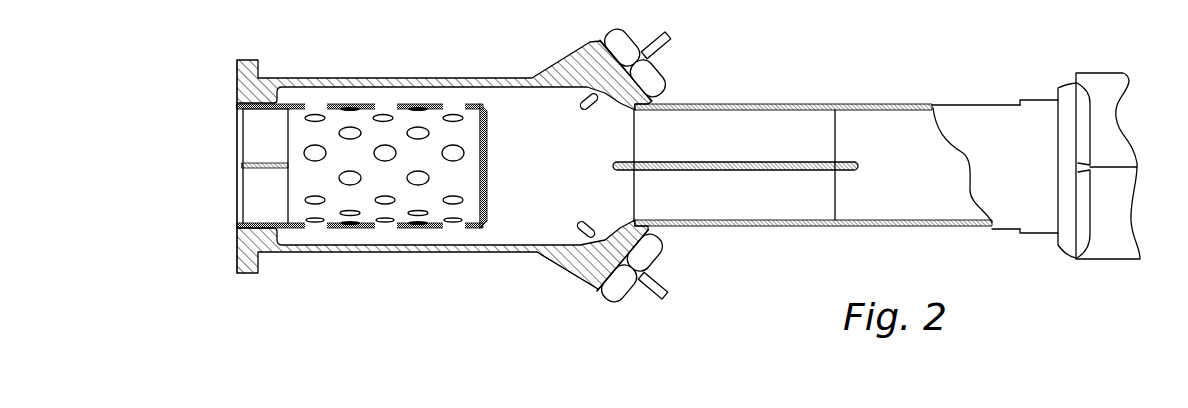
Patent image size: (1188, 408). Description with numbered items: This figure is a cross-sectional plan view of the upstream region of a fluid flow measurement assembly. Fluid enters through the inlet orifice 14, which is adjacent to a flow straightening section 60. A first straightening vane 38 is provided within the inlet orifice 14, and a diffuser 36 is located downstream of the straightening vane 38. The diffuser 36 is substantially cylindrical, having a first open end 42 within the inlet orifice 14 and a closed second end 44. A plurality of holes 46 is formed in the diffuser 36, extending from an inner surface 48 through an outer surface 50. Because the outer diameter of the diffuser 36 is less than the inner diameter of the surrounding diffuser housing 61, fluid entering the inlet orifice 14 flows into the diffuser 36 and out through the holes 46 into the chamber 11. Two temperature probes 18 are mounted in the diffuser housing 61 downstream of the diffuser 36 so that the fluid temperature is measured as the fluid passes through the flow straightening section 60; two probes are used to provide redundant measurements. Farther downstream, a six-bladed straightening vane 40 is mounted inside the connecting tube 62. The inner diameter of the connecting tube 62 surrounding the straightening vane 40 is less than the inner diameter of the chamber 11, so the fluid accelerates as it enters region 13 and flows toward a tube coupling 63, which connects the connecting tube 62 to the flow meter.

The chamber 11 is at (559, 151).
The region 13 is at (749, 150).
The inlet orifice 14 is at (257, 143).
The temperature probes 18 is at (587, 90).
The diffuser 36 is at (402, 117).
The first straightening vane 38 is at (268, 202).
The six-bladed straightening vane 40 is at (737, 200).
The first open end 42 is at (232, 231).
The closed second end 44 is at (487, 201).
The holes 46 is at (350, 182).
The inner surface 48 is at (359, 166).
The outer surface 50 is at (292, 102).
The flow straightening section 60 is at (543, 275).
The diffuser housing 61 is at (425, 78).
The connecting tube 62 is at (843, 104).
The tube coupling 63 is at (1113, 250).